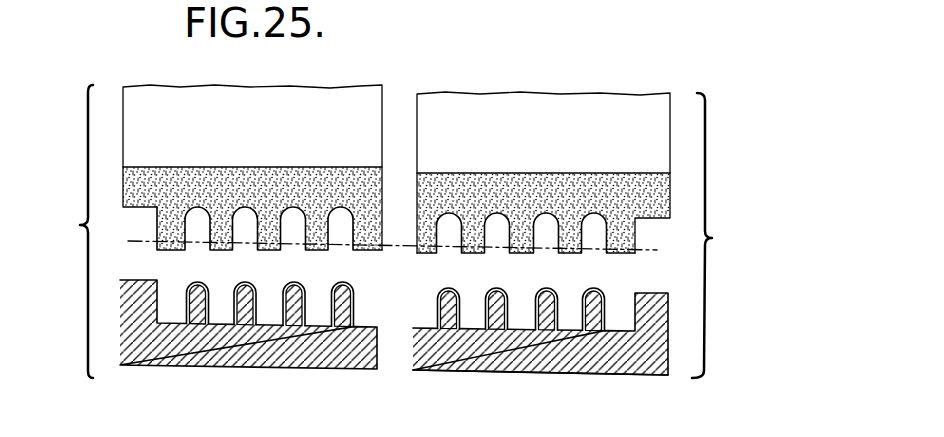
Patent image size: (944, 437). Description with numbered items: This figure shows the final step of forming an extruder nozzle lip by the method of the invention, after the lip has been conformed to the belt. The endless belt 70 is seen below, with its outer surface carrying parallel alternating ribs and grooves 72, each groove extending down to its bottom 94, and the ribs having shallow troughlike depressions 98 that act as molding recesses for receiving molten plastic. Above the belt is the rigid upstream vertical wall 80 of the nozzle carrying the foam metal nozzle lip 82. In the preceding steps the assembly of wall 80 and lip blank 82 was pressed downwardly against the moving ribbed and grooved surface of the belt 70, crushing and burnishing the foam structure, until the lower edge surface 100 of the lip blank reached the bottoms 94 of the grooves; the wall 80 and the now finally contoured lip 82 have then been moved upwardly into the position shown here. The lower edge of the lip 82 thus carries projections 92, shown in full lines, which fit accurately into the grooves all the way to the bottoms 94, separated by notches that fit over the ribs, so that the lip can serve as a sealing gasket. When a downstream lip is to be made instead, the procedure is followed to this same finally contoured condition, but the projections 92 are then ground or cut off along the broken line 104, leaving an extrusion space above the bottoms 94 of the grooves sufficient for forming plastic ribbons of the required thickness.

The endless belt 70 is at (538, 378).
The ribs and grooves 72 is at (354, 293).
The upstream vertical wall 80 is at (531, 95).
The nozzle lip 82 is at (523, 190).
The projections 92 is at (270, 240).
The bottoms of the grooves 94 is at (271, 323).
The troughlike depressions 98 is at (298, 285).
The lower edge surface of the lip blank 100 is at (437, 308).
The broken line 104 is at (644, 252).